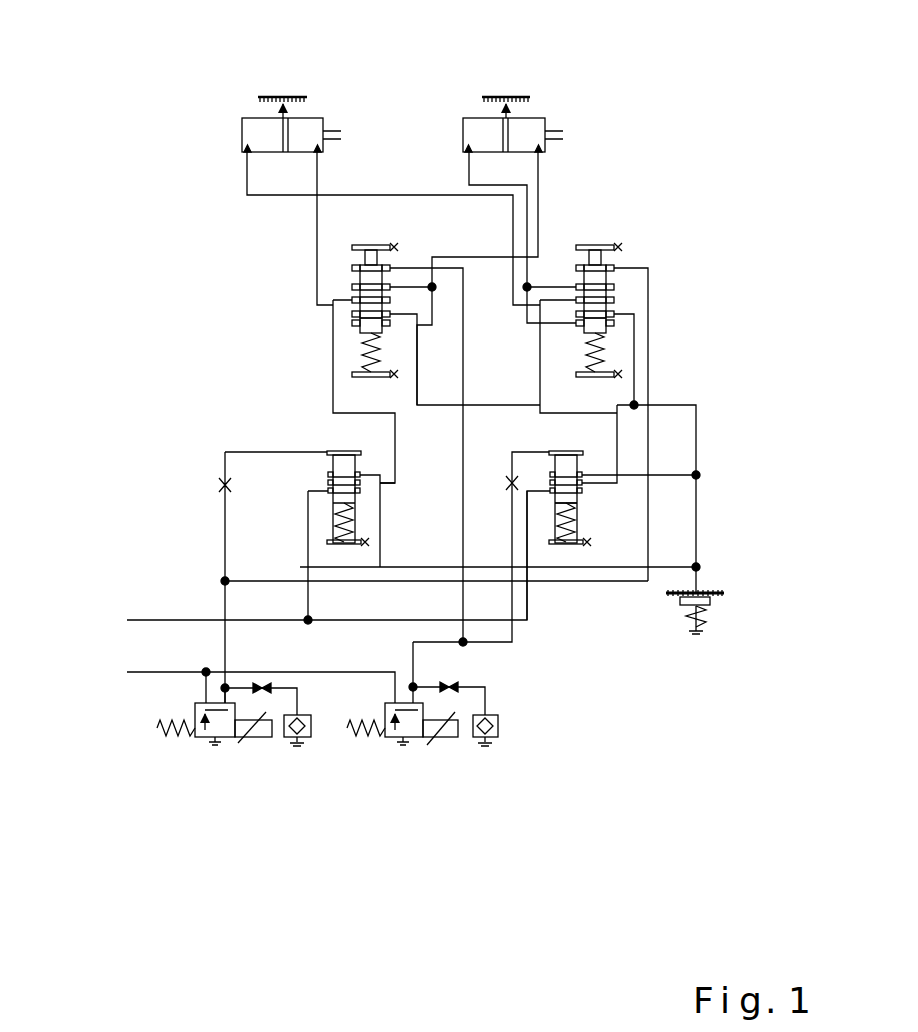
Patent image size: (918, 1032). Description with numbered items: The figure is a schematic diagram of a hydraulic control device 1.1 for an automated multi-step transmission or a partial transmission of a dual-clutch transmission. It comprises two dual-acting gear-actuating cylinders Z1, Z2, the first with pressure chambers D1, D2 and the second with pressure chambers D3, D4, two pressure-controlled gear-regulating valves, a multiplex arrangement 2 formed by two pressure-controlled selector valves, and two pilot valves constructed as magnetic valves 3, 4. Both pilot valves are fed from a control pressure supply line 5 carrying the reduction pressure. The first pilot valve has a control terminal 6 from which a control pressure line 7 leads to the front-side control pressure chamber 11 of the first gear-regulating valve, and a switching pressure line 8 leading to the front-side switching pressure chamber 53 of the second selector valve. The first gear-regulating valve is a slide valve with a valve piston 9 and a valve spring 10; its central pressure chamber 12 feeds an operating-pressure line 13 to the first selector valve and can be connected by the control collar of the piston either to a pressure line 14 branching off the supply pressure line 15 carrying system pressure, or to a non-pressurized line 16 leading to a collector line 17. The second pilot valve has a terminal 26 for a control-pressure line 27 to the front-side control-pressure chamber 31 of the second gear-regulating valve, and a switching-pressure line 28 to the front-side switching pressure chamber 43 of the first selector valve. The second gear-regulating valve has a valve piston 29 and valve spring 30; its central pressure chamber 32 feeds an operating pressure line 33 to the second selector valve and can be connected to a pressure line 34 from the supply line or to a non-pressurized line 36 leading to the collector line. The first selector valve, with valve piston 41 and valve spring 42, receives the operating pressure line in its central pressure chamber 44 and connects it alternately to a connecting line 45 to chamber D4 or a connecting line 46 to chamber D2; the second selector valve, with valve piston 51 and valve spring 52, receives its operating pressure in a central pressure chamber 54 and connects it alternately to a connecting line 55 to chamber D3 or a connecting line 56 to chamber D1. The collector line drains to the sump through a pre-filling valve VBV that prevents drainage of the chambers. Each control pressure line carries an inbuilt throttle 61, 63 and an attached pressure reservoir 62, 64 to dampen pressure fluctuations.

The first gear-actuating cylinder Z1 is at (236, 117).
The first pressure chamber of the first gear-actuating cylinder D1 is at (263, 130).
The second pressure chamber of the first gear-actuating cylinder D2 is at (307, 126).
The second gear-actuating cylinder Z2 is at (458, 117).
The first pressure chamber of the second gear-actuating cylinder D3 is at (483, 133).
The second pressure chamber of the second gear-actuating cylinder D4 is at (525, 127).
The connecting line 55 is at (543, 156).
The connecting line 45 is at (541, 183).
The connecting line 56 is at (245, 165).
The connecting line 46 is at (313, 212).
The front-side switching pressure chamber 43 is at (358, 264).
The central pressure chamber 44 is at (352, 290).
The multiplex arrangement 2 is at (295, 300).
The valve piston 41 is at (366, 327).
The valve spring 42 is at (356, 347).
The hydraulic control device 1.1 is at (318, 387).
The operating-pressure line 13 is at (332, 400).
The control-pressure line 27 is at (466, 630).
The front-side switching pressure chamber 53 is at (618, 249).
The central pressure chamber 54 is at (617, 294).
The valve piston 51 is at (615, 328).
The valve spring 52 is at (633, 334).
The non-pressurized line 36 is at (677, 474).
The operating pressure line 33 is at (590, 470).
The front-side control pressure chamber 11 is at (338, 449).
The central pressure chamber 12 is at (327, 474).
The throttle 61 is at (215, 488).
The valve piston 9 is at (333, 496).
The control pressure line 7 is at (332, 535).
The valve spring 10 is at (300, 564).
The pressure line 14 is at (302, 569).
The supply pressure line 15 is at (296, 574).
The control pressure supply line 5 is at (132, 672).
The switching pressure line 8 is at (287, 578).
The non-pressurized line 16 is at (612, 567).
The throttle 63 is at (572, 452).
The central pressure chamber 32 is at (580, 466).
The front-side control-pressure chamber 31 is at (522, 478).
The switching-pressure line 28 is at (505, 645).
The valve piston 29 is at (580, 498).
The valve spring 30 is at (578, 530).
The pressure line 34 is at (528, 598).
The pre-filling valve VBV is at (713, 620).
The collector line 17 is at (700, 579).
The magnetic valve 3 is at (184, 747).
The pressure reservoir 62 is at (283, 748).
The control terminal 6 is at (235, 667).
The magnetic valve 4 is at (421, 749).
The pressure reservoir 64 is at (505, 735).
The terminal 26 is at (428, 682).